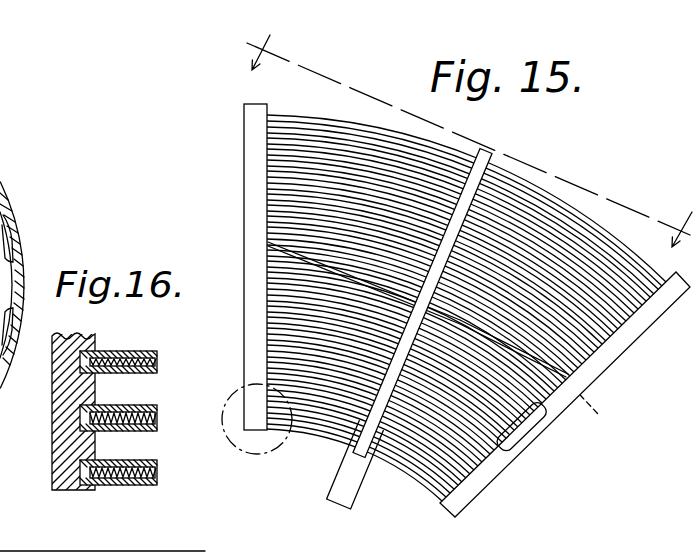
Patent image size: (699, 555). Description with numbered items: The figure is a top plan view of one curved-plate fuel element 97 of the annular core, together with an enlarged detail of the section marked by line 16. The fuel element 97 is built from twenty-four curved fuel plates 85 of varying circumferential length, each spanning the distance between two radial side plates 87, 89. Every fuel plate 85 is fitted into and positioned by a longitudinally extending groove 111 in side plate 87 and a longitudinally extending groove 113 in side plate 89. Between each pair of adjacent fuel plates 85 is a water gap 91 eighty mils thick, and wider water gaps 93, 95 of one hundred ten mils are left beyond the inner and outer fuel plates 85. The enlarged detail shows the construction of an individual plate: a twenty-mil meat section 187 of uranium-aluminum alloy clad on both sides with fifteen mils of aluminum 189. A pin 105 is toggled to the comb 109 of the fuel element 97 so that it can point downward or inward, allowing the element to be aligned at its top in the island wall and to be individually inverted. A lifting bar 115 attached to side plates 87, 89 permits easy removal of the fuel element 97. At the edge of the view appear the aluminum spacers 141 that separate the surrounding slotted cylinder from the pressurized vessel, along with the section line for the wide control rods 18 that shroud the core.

In FIG. 15, the section line for detail view 16 is at (278, 456).
In FIG. 15, the control rods 18 is at (306, 40).
In FIG. 15, the curved fuel plates 85 is at (553, 412).
In FIG. 15, the radial side plate 87 is at (592, 367).
In FIG. 15, the radial side plate 89 is at (252, 241).
In FIG. 16, the radial side plate 89 is at (60, 446).
In FIG. 15, the water gap 91 is at (273, 185).
In FIG. 15, the water gap 93 is at (337, 433).
In FIG. 15, the water gap 95 is at (268, 113).
In FIG. 15, the fuel element 97 is at (634, 356).
In FIG. 15, the pin 105 is at (360, 484).
In FIG. 15, the comb 109 is at (487, 156).
In FIG. 15, the longitudinally extending groove 111 is at (598, 401).
In FIG. 16, the longitudinally extending groove 113 is at (98, 407).
In FIG. 15, the lifting bar 115 is at (555, 545).
In FIG. 16, the aluminum spacers 141 is at (12, 292).
In FIG. 16, the meat section 187 is at (156, 362).
In FIG. 16, the aluminum cladding 189 is at (110, 352).